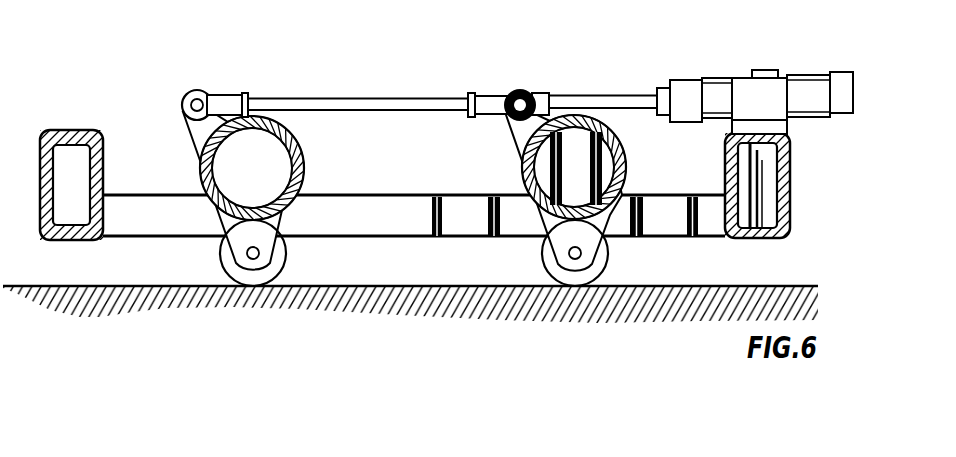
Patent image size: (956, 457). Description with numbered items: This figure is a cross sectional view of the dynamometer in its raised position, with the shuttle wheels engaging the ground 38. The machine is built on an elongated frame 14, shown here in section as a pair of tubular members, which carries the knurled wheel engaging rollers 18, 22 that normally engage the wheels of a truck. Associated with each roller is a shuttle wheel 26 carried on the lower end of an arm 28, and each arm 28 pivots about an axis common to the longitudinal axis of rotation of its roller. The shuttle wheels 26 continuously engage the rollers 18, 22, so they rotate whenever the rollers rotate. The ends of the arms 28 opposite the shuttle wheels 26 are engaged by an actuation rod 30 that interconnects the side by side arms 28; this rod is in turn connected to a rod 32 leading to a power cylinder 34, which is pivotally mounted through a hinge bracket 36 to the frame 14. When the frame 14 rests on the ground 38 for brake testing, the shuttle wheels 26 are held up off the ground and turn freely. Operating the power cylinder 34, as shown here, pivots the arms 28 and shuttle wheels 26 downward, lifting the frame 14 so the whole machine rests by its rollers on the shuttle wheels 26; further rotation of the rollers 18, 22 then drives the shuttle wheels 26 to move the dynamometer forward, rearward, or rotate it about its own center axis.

The elongated frame 14 is at (73, 131).
The second wheel engaging roller 18 is at (308, 136).
The roller 22 is at (523, 152).
The shuttle wheel 26 is at (548, 253).
The arm 28 is at (215, 127).
The actuation rod 30 is at (450, 98).
The rod 32 is at (575, 98).
The power cylinder 34 is at (718, 97).
The hinge bracket 36 is at (760, 90).
The ground 38 is at (757, 285).